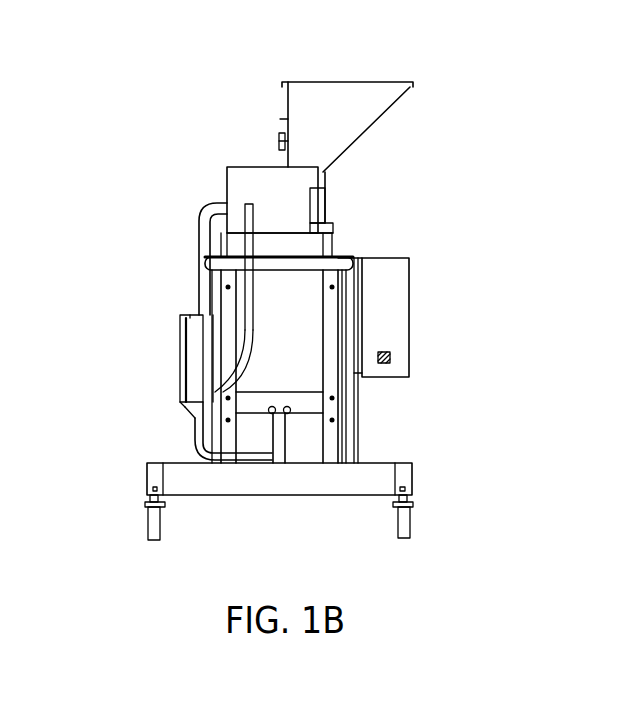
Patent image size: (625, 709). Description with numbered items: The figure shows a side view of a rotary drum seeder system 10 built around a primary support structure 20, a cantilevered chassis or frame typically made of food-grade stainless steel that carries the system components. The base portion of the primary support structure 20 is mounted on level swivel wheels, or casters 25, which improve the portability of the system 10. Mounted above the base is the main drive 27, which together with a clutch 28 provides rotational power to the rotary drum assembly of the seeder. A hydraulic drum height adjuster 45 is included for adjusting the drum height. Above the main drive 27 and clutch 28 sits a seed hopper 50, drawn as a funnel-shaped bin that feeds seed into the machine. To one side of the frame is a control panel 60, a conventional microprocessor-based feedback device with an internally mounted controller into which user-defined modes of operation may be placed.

The rotary drum seeder system 10 is at (257, 303).
The primary support structure 20 is at (410, 462).
The casters 25 is at (148, 512).
The main drive 27 is at (308, 367).
The clutch 28 is at (258, 172).
The hydraulic drum height adjuster 45 is at (282, 458).
The seed hopper 50 is at (365, 132).
The control panel 60 is at (409, 325).